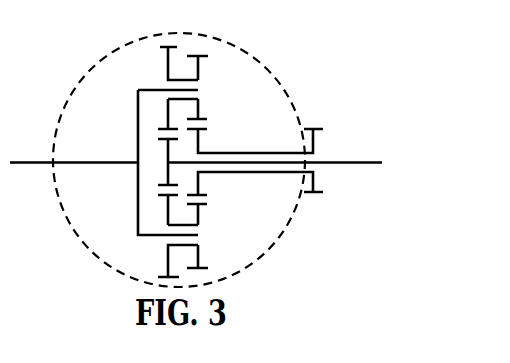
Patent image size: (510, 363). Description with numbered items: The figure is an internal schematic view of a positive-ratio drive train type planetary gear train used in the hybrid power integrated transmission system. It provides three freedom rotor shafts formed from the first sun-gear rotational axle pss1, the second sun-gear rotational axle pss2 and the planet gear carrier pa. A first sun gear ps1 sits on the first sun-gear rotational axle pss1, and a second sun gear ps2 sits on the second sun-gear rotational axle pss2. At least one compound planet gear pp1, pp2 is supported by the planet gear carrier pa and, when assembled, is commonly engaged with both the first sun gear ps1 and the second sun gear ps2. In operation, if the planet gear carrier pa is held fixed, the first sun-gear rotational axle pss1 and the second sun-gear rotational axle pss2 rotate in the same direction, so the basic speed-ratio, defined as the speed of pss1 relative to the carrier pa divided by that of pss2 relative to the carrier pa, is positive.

The planet gear carrier pa is at (104, 162).
The compound planet gear pp1 is at (156, 162).
The compound planet gear pp2 is at (214, 162).
The first sun gear ps1 is at (169, 162).
The second sun gear ps2 is at (255, 187).
The first sun-gear rotational axle pss1 is at (277, 146).
The second sun-gear rotational axle pss2 is at (255, 136).